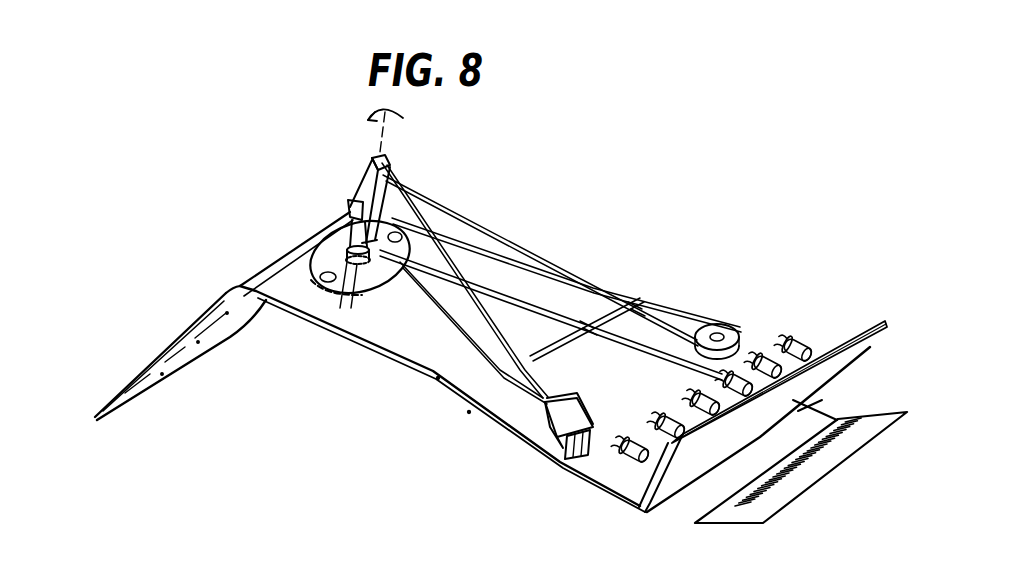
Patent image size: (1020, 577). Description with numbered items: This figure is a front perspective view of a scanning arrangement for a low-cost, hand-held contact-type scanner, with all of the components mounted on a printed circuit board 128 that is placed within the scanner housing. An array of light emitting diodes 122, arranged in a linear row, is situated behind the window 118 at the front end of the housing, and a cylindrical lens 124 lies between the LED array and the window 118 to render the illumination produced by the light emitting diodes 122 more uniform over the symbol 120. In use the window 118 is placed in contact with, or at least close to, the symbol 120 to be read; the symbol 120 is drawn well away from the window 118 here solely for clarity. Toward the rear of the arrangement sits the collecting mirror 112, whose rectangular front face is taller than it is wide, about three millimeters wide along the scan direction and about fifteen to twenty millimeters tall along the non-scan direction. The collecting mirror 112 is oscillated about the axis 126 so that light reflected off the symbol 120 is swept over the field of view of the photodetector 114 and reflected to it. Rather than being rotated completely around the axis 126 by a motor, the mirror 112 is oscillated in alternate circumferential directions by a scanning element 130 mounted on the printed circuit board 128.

The collecting mirror 112 is at (357, 183).
The photodetector 114 is at (547, 438).
The window 118 is at (864, 349).
The symbol 120 is at (760, 519).
The light emitting diodes 122 is at (625, 462).
The cylindrical lens 124 is at (840, 337).
The axis 126 is at (366, 123).
The printed circuit board 128 is at (437, 358).
The scanning element 130 is at (330, 296).